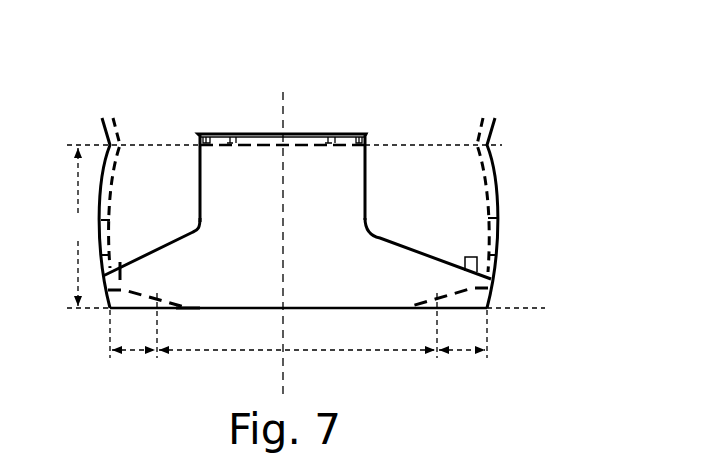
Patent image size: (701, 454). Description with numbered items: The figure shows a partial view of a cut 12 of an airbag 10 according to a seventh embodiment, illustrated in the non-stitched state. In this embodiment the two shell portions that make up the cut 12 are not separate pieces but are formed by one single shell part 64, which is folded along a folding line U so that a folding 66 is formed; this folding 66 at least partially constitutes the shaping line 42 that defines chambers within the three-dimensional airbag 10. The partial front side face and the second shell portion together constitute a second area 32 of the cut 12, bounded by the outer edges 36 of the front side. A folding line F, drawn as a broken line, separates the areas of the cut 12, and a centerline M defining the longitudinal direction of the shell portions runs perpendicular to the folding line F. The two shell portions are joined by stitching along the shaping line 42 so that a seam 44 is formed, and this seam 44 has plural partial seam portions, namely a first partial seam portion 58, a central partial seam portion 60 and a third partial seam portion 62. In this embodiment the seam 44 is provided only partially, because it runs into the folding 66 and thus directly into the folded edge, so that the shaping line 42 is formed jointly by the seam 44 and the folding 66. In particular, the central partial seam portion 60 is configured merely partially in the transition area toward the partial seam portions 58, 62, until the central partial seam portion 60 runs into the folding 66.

The airbag 10 is at (148, 110).
The cut 12 is at (202, 118).
The second area 32 is at (77, 227).
The outer edges of the front side 36 is at (497, 263).
The shaping line 42 is at (188, 307).
The seam 44 is at (128, 292).
The first partial seam portion 58 is at (118, 266).
The central partial seam portion 60 is at (178, 295).
The third partial seam portion 62 is at (458, 270).
The single shell part 64 is at (463, 172).
The folding 66 is at (243, 308).
The centerline M is at (283, 114).
The folding line F is at (434, 147).
The folding line U is at (510, 310).